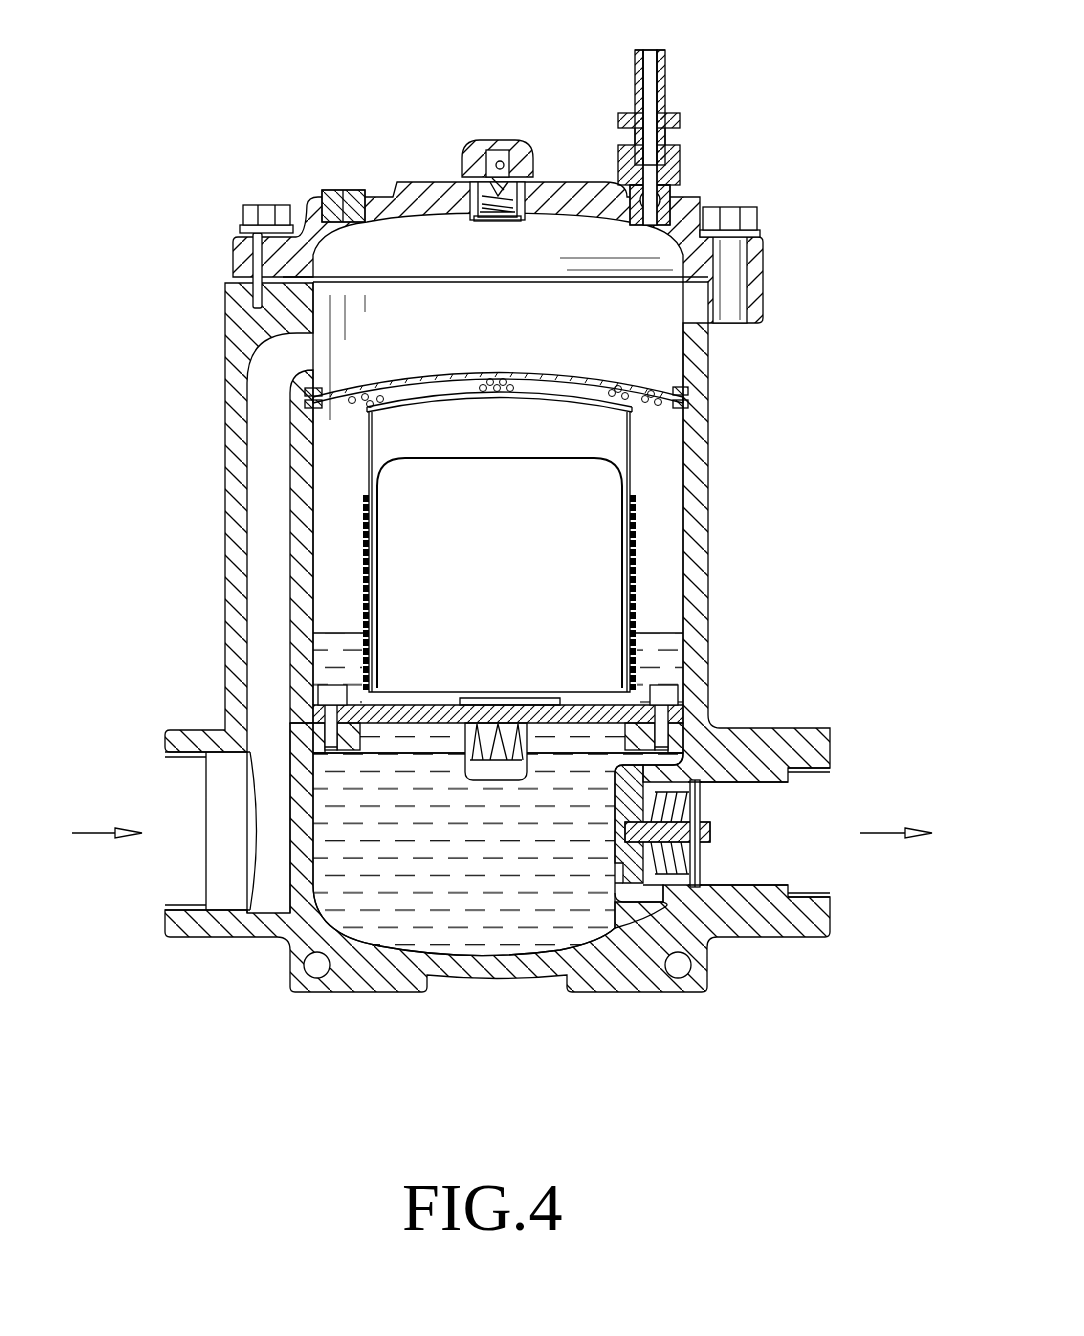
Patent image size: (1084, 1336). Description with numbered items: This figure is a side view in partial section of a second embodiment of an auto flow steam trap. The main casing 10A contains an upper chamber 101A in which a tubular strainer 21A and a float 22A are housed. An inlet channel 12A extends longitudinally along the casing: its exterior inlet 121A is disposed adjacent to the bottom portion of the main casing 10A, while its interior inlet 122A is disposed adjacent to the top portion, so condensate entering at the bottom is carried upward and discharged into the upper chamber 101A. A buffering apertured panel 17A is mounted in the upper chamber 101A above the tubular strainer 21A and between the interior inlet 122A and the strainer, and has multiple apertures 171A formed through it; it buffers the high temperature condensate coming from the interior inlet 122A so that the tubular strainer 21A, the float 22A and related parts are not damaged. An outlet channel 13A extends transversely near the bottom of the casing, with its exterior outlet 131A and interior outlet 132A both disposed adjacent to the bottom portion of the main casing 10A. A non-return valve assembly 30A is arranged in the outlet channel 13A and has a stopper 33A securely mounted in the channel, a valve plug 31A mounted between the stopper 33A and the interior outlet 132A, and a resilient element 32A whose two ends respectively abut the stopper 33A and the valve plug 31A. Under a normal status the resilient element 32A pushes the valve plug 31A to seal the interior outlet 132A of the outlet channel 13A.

The main casing 10A is at (497, 679).
The upper chamber 101A is at (422, 320).
The buffering apertured panel 17A is at (535, 373).
The apertures 171A is at (643, 387).
The tubular strainer 21A is at (573, 462).
The float 22A is at (628, 480).
The inlet channel 12A is at (267, 550).
The interior inlet 122A is at (280, 343).
The exterior inlet 121A is at (190, 907).
The outlet channel 13A is at (745, 867).
The exterior outlet 131A is at (797, 895).
The interior outlet 132A is at (622, 832).
The non-return valve assembly 30A is at (763, 860).
The valve plug 31A is at (643, 853).
The resilient element 32A is at (626, 860).
The stopper 33A is at (700, 862).